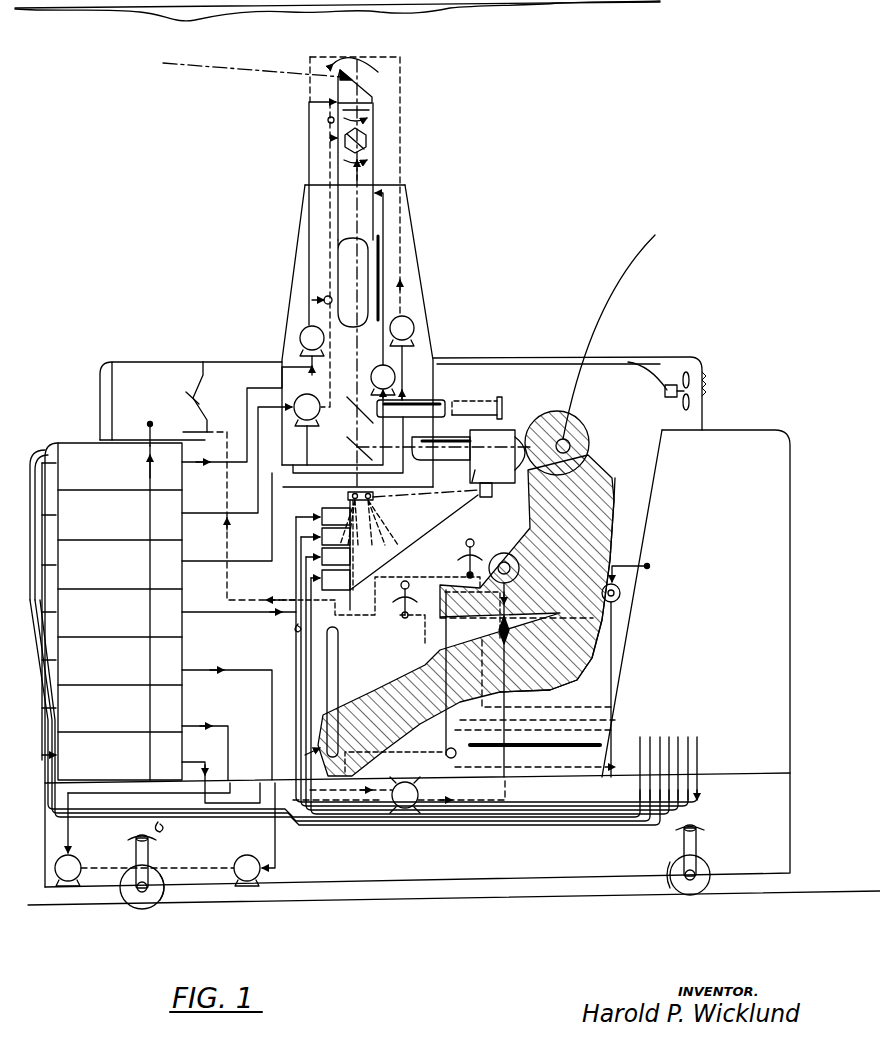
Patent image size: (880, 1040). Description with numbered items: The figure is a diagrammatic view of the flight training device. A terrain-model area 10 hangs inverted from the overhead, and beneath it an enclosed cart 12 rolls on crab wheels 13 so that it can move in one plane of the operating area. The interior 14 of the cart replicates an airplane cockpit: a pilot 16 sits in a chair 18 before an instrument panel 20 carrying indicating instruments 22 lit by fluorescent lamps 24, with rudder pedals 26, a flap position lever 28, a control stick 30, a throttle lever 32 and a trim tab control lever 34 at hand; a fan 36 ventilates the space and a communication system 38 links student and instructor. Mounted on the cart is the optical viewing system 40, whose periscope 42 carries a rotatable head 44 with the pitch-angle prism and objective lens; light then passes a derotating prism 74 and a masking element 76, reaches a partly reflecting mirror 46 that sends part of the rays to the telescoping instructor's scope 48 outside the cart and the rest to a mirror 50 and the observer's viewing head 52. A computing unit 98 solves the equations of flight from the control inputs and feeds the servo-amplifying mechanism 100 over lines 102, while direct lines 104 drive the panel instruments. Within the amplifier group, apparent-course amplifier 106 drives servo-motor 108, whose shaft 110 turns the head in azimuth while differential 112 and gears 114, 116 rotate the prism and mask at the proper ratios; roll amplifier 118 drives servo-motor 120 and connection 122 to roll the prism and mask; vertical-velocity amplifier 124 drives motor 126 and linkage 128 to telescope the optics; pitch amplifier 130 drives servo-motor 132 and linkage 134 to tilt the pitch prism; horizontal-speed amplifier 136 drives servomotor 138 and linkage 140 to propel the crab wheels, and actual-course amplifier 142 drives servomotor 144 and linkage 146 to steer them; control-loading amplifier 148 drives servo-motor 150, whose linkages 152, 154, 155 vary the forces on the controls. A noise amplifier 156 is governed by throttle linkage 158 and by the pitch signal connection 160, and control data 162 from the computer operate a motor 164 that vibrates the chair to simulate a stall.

The area 10 is at (447, 9).
The cart 12 is at (402, 878).
The crab wheels 13 is at (136, 895).
The interior 14 is at (614, 407).
The pilot 16 is at (585, 478).
The chair 18 is at (617, 486).
The instrument panel 20 is at (350, 575).
The indicating instruments 22 is at (346, 520).
The fluorescent lamps 24 is at (370, 499).
The rudder pedals 26 is at (325, 738).
The flap position lever 28 is at (413, 589).
The control stick 30 is at (456, 592).
The throttle lever 32 is at (474, 550).
The control lever 34 is at (514, 549).
The fan 36 is at (672, 398).
The communication system 38 is at (512, 452).
The optical viewing system 40 is at (432, 134).
The periscope 42 is at (375, 180).
The rotatable head 44 is at (370, 98).
The partly reflecting mirror 46 is at (358, 410).
The instructor's scope 48 is at (470, 401).
The mirror 50 is at (356, 448).
The observer's viewing head 52 is at (490, 432).
The derotating prism 74 is at (366, 138).
The masking element 76 is at (372, 112).
The computing unit 98 is at (722, 576).
The servo-amplifying mechanism 100 is at (332, 637).
The lines 102 is at (158, 824).
The lines 104 is at (296, 628).
The apparent-course amplifier 106 is at (125, 481).
The servo-motor 108 is at (300, 334).
The mechanical connection 110 is at (309, 176).
The differential 112 is at (322, 298).
The gear 114 is at (336, 139).
The gear 116 is at (328, 120).
The roll amplifier 118 is at (125, 529).
The servo-motor 120 is at (307, 422).
The mechanical connection 122 is at (330, 366).
The vertical-velocity amplifier 124 is at (125, 577).
The motor 126 is at (395, 380).
The mechanical linkage 128 is at (384, 222).
The pitch amplifier 130 is at (125, 624).
The servo-motor 132 is at (412, 325).
The mechanical linkage 134 is at (404, 192).
The horizontal-speed amplifier 136 is at (125, 671).
The servomotor 138 is at (260, 864).
The mechanical linkage 140 is at (188, 868).
The actual-course amplifier 142 is at (125, 717).
The servomotor 144 is at (98, 856).
The mechanical linkage 146 is at (106, 880).
The control-loading amplifier 148 is at (125, 763).
The servo-motor 150 is at (410, 809).
The mechanical linkage 152 is at (380, 805).
The mechanical linkage 154 is at (412, 760).
The mechanical linkage 155 is at (504, 797).
The noise amplifier 156 is at (160, 403).
The mechanical linkage 158 is at (228, 578).
The connection 160 is at (152, 478).
The control data 162 is at (620, 564).
The motor 164 is at (611, 604).